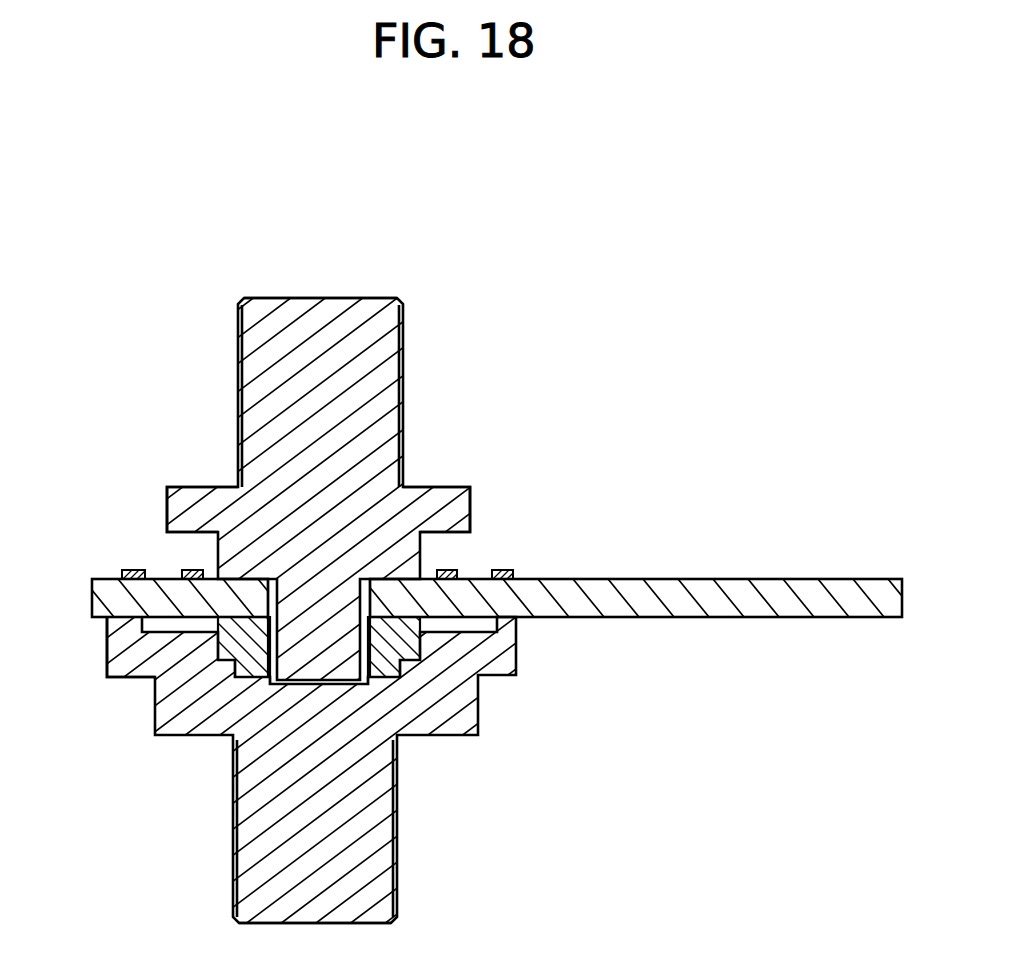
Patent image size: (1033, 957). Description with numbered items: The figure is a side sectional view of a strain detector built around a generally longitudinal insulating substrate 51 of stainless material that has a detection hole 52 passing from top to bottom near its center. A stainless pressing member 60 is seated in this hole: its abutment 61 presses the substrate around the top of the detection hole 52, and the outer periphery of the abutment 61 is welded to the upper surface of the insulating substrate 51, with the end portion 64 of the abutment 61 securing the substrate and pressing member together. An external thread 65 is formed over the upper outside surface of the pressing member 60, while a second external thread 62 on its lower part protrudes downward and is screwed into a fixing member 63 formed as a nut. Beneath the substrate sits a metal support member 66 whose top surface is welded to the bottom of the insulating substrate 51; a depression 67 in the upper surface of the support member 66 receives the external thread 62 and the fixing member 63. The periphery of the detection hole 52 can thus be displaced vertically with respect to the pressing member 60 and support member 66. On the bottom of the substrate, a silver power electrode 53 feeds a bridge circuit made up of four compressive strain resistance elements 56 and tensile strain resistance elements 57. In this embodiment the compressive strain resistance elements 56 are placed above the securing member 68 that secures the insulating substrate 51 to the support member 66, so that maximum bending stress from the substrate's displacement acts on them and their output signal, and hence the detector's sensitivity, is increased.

The insulating substrate 51 is at (692, 607).
The detection hole 52 is at (272, 583).
The power electrode 53 is at (375, 365).
The compressive strain resistance element 56 is at (515, 570).
The tensile strain resistance element 57 is at (455, 570).
The pressing member 60 is at (352, 332).
The abutment 61 is at (245, 587).
The external thread 62 is at (272, 662).
The fixing member 63 is at (380, 657).
The end portion 64 is at (205, 577).
The external thread 65 is at (400, 412).
The support member 66 is at (263, 813).
The depression 67 is at (380, 683).
The securing member 68 is at (127, 622).